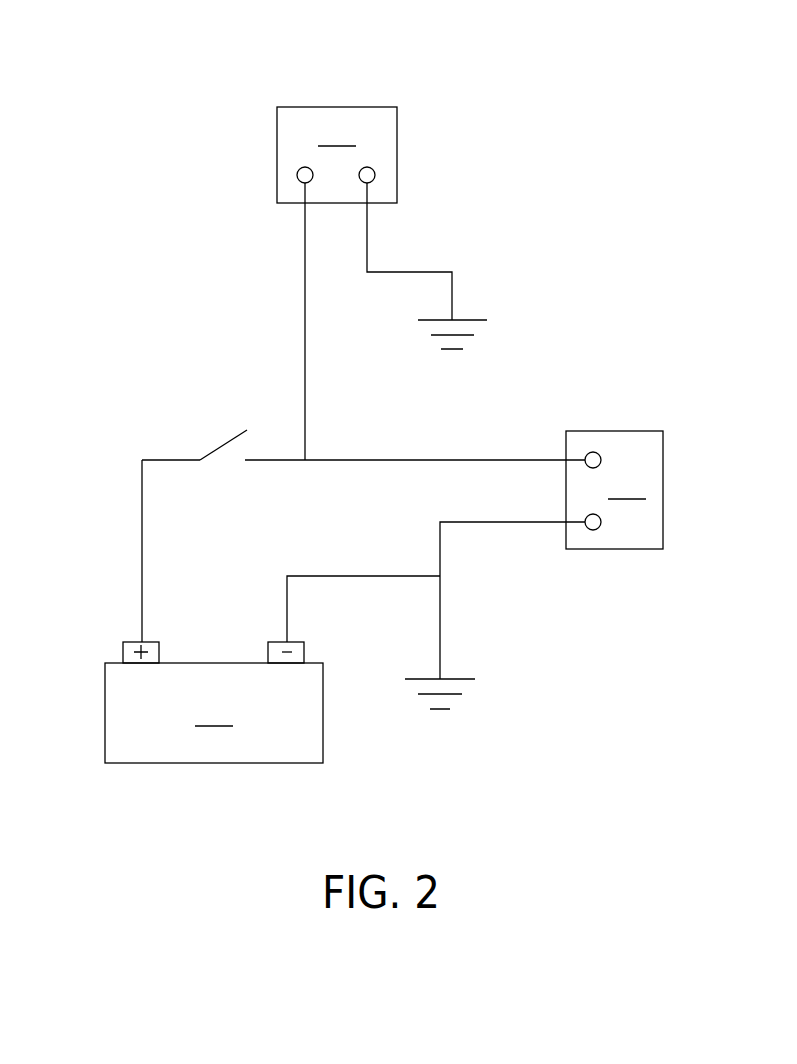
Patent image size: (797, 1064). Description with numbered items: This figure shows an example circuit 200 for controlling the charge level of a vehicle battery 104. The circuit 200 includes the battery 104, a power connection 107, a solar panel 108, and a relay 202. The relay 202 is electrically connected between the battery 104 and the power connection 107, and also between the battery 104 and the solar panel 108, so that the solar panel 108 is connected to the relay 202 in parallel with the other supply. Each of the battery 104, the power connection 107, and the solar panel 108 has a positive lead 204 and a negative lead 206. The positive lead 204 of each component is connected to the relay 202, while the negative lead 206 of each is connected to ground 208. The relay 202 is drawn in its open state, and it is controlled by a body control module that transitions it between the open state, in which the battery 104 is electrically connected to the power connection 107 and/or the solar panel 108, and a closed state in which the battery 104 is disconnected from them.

The circuit 200 is at (157, 60).
The battery 104 is at (214, 713).
The power connection 107 is at (614, 490).
The solar panel 108 is at (337, 155).
The relay 202 is at (215, 437).
The positive lead 204 is at (297, 175).
The negative lead 206 is at (375, 175).
The ground 208 is at (471, 320).